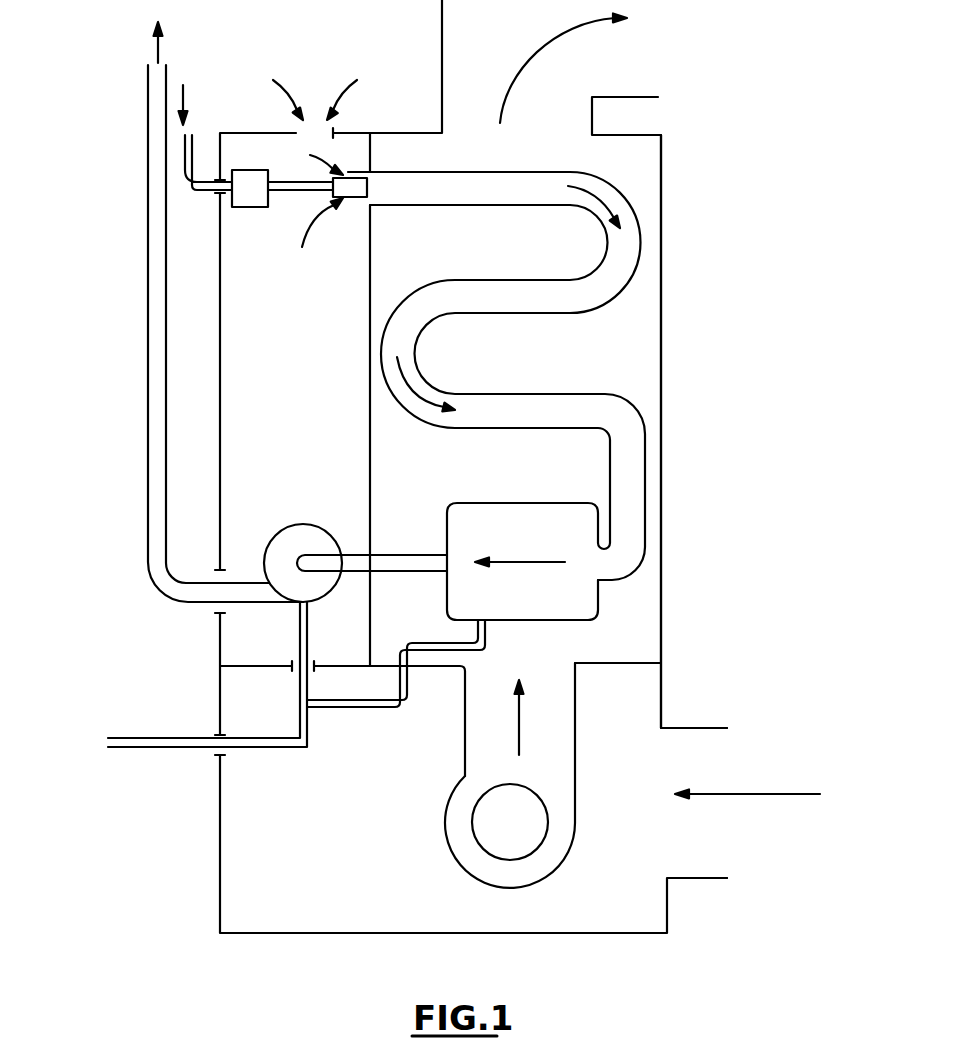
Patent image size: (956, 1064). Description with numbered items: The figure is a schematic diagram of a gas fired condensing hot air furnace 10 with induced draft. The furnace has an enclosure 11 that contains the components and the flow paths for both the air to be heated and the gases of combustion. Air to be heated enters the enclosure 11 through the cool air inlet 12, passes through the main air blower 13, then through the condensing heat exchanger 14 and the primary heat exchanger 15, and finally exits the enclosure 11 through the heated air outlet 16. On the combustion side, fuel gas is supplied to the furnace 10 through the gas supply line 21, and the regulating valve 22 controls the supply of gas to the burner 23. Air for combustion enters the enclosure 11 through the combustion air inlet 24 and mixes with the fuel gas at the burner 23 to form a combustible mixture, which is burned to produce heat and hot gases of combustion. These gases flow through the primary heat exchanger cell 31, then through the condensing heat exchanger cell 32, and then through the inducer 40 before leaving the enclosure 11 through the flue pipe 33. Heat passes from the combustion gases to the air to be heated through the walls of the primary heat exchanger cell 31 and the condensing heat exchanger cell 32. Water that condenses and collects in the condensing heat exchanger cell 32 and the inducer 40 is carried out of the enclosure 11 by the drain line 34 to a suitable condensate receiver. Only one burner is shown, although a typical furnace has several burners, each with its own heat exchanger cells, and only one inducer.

The furnace 10 is at (694, 302).
The enclosure 11 is at (661, 393).
The cool air inlet 12 is at (737, 784).
The main air blower 13 is at (456, 864).
The condensing heat exchanger 14 is at (422, 539).
The primary heat exchanger 15 is at (600, 371).
The heated air outlet 16 is at (665, 46).
The gas supply line 21 is at (192, 140).
The regulating valve 22 is at (248, 207).
The burner 23 is at (350, 198).
The combustion air inlet 24 is at (314, 100).
The primary heat exchanger cell 31 is at (458, 171).
The condensing heat exchanger cell 32 is at (519, 503).
The flue pipe 33 is at (148, 462).
The drain line 34 is at (308, 733).
The inducer 40 is at (290, 525).